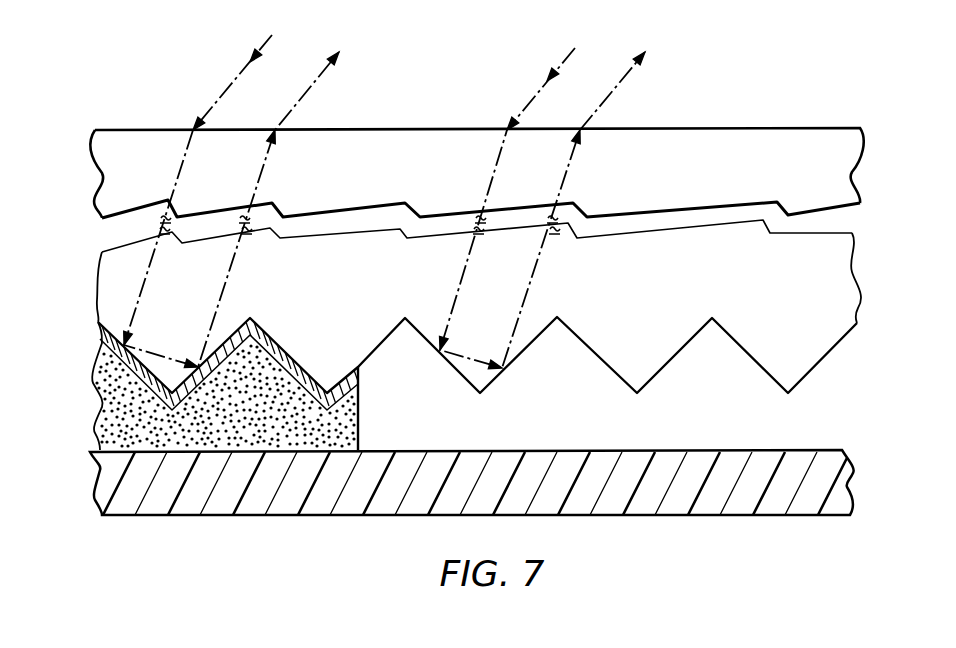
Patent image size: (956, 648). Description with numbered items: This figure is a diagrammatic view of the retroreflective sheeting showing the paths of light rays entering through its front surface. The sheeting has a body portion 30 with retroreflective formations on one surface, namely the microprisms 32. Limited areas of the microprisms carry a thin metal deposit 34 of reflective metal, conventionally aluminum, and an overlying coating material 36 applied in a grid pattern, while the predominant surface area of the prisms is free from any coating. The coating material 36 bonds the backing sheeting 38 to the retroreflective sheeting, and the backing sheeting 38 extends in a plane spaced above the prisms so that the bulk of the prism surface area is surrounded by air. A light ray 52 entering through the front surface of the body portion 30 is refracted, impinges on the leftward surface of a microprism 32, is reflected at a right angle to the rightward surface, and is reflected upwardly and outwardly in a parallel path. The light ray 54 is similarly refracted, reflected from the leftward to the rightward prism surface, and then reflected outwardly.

The body portion 30 is at (393, 153).
The microprism 32 is at (338, 358).
The metal deposit 34 is at (257, 331).
The coating material 36 is at (125, 416).
The backing sheeting 38 is at (302, 500).
The light ray 52 is at (220, 98).
The light ray 54 is at (540, 88).